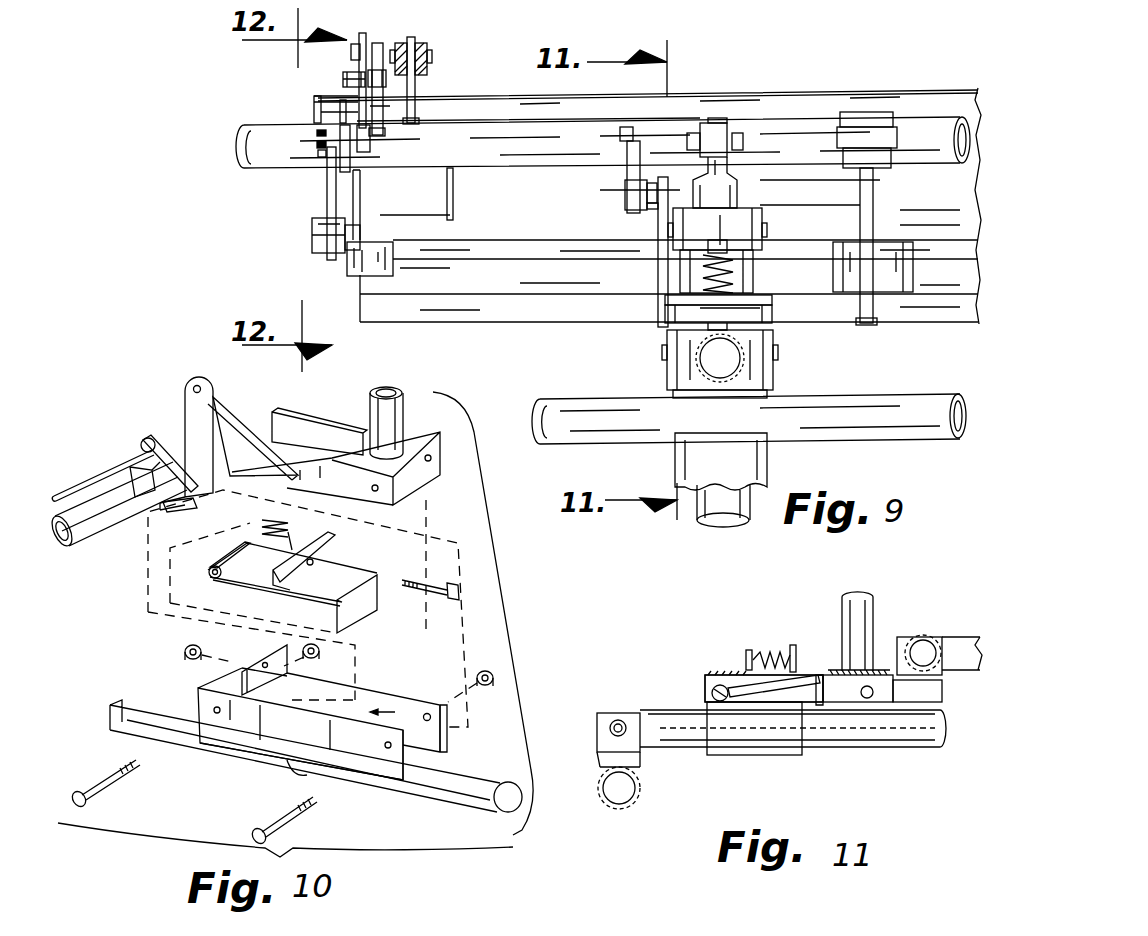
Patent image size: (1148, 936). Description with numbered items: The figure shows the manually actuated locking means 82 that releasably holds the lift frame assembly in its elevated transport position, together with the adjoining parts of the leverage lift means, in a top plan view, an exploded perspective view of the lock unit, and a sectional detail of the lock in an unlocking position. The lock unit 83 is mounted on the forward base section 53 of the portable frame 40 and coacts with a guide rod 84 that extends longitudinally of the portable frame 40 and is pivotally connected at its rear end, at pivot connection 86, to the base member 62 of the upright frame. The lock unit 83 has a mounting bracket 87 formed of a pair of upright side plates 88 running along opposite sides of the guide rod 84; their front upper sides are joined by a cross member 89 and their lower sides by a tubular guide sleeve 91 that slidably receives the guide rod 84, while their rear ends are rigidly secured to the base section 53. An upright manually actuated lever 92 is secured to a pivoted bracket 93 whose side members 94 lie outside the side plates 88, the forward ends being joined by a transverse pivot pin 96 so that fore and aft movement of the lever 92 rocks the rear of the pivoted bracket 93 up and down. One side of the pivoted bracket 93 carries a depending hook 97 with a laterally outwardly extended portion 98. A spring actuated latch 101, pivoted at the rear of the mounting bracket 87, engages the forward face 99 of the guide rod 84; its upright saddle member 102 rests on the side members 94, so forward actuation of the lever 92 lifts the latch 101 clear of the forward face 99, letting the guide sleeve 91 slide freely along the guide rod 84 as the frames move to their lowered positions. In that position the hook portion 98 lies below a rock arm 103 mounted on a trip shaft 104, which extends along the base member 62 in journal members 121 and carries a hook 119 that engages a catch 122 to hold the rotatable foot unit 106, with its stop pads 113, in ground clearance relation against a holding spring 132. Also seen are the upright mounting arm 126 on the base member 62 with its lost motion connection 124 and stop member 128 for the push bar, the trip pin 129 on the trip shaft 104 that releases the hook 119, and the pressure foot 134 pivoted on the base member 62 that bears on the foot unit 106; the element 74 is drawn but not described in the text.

In FIG. 9, the portable frame 40 is at (572, 397).
In FIG. 11, the portable frame 40 is at (913, 623).
In FIG. 9, the forward base section 53 is at (903, 403).
In FIG. 11, the forward base section 53 is at (928, 637).
In FIG. 9, the base member 62 is at (793, 130).
In FIG. 10, the base member 62 is at (93, 517).
In FIG. 11, the base member 62 is at (605, 807).
In FIG. 9, the sleeve 74 is at (418, 52).
In FIG. 9, the locking means 82 is at (778, 333).
In FIG. 10, the locking means 82 is at (295, 390).
In FIG. 11, the locking means 82 is at (813, 645).
In FIG. 9, the lock unit 83 is at (652, 340).
In FIG. 10, the lock unit 83 is at (210, 773).
In FIG. 11, the lock unit 83 is at (813, 757).
In FIG. 9, the guide rod 84 is at (710, 502).
In FIG. 10, the guide rod 84 is at (430, 790).
In FIG. 11, the guide rod 84 is at (687, 733).
In FIG. 9, the pivot connection 86 is at (720, 137).
In FIG. 10, the mounting bracket 87 is at (383, 686).
In FIG. 9, the side plates 88 is at (680, 273).
In FIG. 10, the side plates 88 is at (367, 747).
In FIG. 11, the side plates 88 is at (867, 740).
In FIG. 9, the cross member 89 is at (737, 222).
In FIG. 10, the cross member 89 is at (222, 685).
In FIG. 11, the cross member 89 is at (712, 673).
In FIG. 10, the tubular guide sleeve 91 is at (275, 760).
In FIG. 11, the tubular guide sleeve 91 is at (770, 753).
In FIG. 9, the manually actuated lever 92 is at (697, 367).
In FIG. 10, the manually actuated lever 92 is at (400, 395).
In FIG. 11, the manually actuated lever 92 is at (873, 597).
In FIG. 9, the pivoted bracket 93 is at (767, 313).
In FIG. 10, the pivoted bracket 93 is at (332, 418).
In FIG. 10, the side members 94 is at (293, 410).
In FIG. 9, the transverse pivot pin 96 is at (777, 362).
In FIG. 10, the transverse pivot pin 96 is at (293, 815).
In FIG. 9, the depending hook 97 is at (652, 209).
In FIG. 10, the depending hook 97 is at (187, 400).
In FIG. 9, the laterally outwardly extended portion 98 is at (625, 192).
In FIG. 10, the laterally outwardly extended portion 98 is at (193, 507).
In FIG. 10, the forward face 99 is at (515, 836).
In FIG. 9, the spring actuated latch 101 is at (687, 285).
In FIG. 10, the spring actuated latch 101 is at (260, 580).
In FIG. 11, the spring actuated latch 101 is at (745, 683).
In FIG. 9, the upright saddle member 102 is at (690, 298).
In FIG. 10, the upright saddle member 102 is at (330, 543).
In FIG. 9, the rock arm 103 is at (652, 172).
In FIG. 10, the rock arm 103 is at (163, 497).
In FIG. 9, the trip shaft 104 is at (523, 153).
In FIG. 10, the trip shaft 104 is at (117, 463).
In FIG. 9, the rotatable foot unit 106 is at (463, 336).
In FIG. 9, the stop pads 113 is at (360, 262).
In FIG. 9, the hook 119 is at (330, 197).
In FIG. 9, the journal members 121 is at (355, 172).
In FIG. 9, the catch 122 is at (320, 240).
In FIG. 9, the lost motion connection 124 is at (343, 80).
In FIG. 9, the upright mounting arm 126 is at (383, 113).
In FIG. 9, the stop member 128 is at (352, 52).
In FIG. 9, the trip pin 129 is at (363, 143).
In FIG. 9, the holding spring 132 is at (320, 148).
In FIG. 9, the pressure foot 134 is at (870, 223).